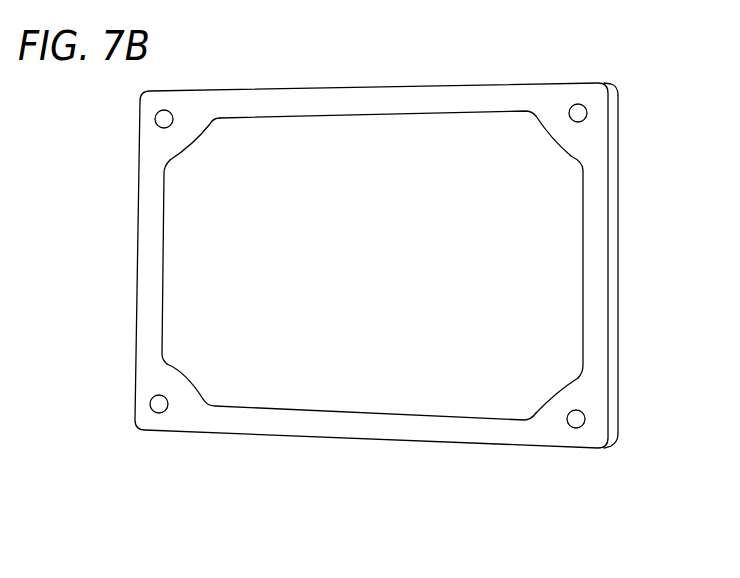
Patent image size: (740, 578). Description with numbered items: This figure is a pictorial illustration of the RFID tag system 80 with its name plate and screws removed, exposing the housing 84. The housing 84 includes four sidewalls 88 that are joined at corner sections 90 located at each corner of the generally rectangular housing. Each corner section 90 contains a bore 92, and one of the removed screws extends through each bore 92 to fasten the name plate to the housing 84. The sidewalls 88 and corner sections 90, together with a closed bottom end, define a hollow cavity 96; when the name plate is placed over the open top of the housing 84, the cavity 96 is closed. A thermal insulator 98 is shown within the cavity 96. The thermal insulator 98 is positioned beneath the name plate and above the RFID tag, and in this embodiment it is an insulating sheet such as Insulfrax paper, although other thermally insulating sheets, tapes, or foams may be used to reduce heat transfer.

The RFID tag system 80 is at (640, 260).
The housing 84 is at (608, 213).
The sidewalls 88 is at (612, 304).
The corner sections 90 is at (190, 128).
The bore 92 is at (160, 121).
The hollow cavity 96 is at (190, 282).
The thermal insulator 98 is at (372, 268).